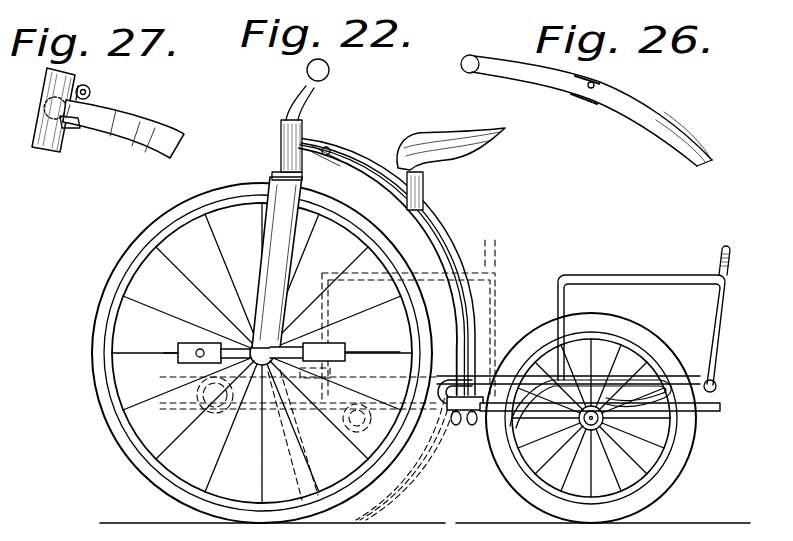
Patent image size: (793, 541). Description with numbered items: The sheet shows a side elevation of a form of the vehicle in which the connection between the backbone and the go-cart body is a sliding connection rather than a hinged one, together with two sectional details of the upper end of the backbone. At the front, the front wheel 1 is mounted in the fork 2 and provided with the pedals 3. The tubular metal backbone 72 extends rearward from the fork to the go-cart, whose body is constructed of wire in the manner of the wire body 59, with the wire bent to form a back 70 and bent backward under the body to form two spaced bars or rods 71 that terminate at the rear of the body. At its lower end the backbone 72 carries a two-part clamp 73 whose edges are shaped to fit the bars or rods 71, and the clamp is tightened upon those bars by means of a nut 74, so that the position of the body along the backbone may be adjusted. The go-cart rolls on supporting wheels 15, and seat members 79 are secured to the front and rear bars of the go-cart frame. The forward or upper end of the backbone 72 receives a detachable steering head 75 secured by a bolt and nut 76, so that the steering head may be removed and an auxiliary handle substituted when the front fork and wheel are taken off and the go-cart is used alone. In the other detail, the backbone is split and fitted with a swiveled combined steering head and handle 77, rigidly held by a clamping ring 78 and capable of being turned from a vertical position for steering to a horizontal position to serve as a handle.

In FIG. 22, the front wheel 1 is at (102, 287).
In FIG. 22, the fork 2 is at (272, 240).
In FIG. 22, the pedals 3 is at (200, 356).
In FIG. 22, the supporting wheels 15 is at (694, 445).
In FIG. 22, the wire body 59 is at (619, 278).
In FIG. 22, the back 70 is at (728, 265).
In FIG. 22, the bars or rods 71 is at (722, 407).
In FIG. 22, the backbone 72 is at (438, 240).
In FIG. 26, the backbone 72 is at (686, 126).
In FIG. 27, the backbone 72 is at (148, 120).
In FIG. 22, the two-part clamp 73 is at (446, 416).
In FIG. 22, the nut 74 is at (472, 426).
In FIG. 22, the steering head 75 is at (280, 152).
In FIG. 22, the bolt and nut 76 is at (330, 154).
In FIG. 26, the bolt and nut 76 is at (590, 88).
In FIG. 27, the combined steering head and handle 77 is at (46, 140).
In FIG. 27, the clamping ring 78 is at (90, 93).
In FIG. 22, the seat members 79 is at (697, 377).